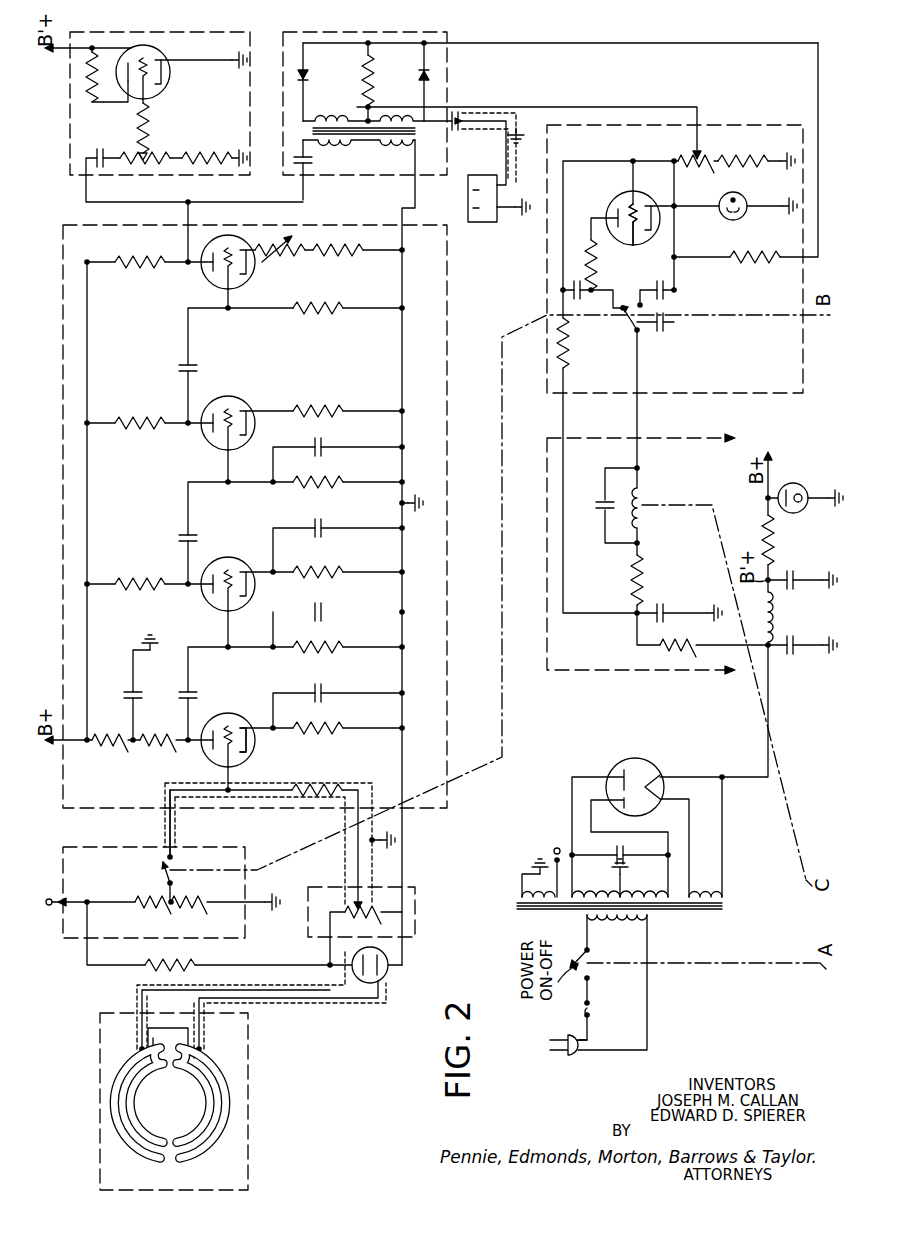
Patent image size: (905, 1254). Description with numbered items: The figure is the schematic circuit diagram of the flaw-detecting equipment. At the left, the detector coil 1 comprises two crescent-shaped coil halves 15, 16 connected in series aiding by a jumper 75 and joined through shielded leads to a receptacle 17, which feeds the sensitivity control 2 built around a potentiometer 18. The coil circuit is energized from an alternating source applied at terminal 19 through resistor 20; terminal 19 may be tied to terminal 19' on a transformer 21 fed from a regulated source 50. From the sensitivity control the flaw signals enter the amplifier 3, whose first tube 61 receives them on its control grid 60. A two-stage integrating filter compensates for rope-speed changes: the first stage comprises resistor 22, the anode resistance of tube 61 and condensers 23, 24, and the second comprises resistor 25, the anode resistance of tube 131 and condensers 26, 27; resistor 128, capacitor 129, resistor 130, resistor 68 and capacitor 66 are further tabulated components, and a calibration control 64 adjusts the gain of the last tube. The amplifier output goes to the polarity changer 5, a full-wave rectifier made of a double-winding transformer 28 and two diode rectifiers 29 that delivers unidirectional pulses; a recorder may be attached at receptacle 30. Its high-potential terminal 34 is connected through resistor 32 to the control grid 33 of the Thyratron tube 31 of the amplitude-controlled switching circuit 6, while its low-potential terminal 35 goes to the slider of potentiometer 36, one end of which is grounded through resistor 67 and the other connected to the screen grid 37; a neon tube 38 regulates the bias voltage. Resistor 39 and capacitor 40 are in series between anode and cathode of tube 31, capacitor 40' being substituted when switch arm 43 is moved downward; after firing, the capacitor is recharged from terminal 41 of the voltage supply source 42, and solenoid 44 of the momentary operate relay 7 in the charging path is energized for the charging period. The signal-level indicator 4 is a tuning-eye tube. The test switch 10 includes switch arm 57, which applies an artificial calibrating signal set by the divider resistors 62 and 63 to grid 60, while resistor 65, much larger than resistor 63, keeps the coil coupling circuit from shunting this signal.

The sensing unit 1 is at (100, 1068).
The sensitivity control 2 is at (308, 894).
The amplifier 3 is at (63, 520).
The signal-level indicator 4 is at (70, 116).
The polarity changer 5 is at (283, 116).
The amplitude-controlled switching circuit 6 is at (547, 222).
The momentary load operate relay 7 is at (547, 492).
The test or calibrating signal switch 10 is at (63, 866).
The coil half 15 is at (150, 1149).
The coil half 16 is at (222, 1118).
The receptacle 17 is at (389, 969).
The potentiometer 18 is at (373, 889).
The terminal 19 is at (51, 918).
The terminal 19' is at (546, 857).
The resistor 20 is at (143, 964).
The transformer 21 is at (662, 913).
The resistor 22 is at (152, 736).
The condenser 23 is at (183, 691).
The condenser 24 is at (315, 609).
The resistor 25 is at (122, 578).
The condenser 26 is at (180, 533).
The condenser 27 is at (315, 443).
The double-winding transformer 28 is at (300, 131).
The diode rectifiers 29 is at (299, 71).
The receptacle 30 is at (490, 224).
The gas-filled rectifier tube 31 is at (612, 213).
The resistor 32 is at (753, 264).
The control grid 33 is at (640, 242).
The high potential terminal 34 is at (355, 43).
The low potential output terminal 35 is at (358, 107).
The potentiometer 36 is at (684, 158).
The screen grid 37 is at (624, 208).
The neon tube 38 is at (720, 206).
The resistor 39 is at (598, 247).
The capacitor 40 is at (652, 284).
The capacitor 40' is at (662, 344).
The terminal 41 is at (770, 656).
The voltage supply source 42 is at (689, 735).
The switch arm 43 is at (632, 335).
The solenoid 44 is at (642, 504).
The source of regulated voltage 50 is at (558, 1047).
The switch arm 57 is at (164, 869).
The control grid 60 is at (230, 724).
The first amplifier tube 61 is at (245, 719).
The resistor 62 is at (143, 906).
The resistor 63 is at (202, 901).
The calibration control 64 is at (285, 257).
The resistor 65 is at (312, 786).
The capacitor 66 is at (577, 281).
The resistor 67 is at (742, 160).
The resistor 68 is at (372, 72).
The jumper 75 is at (150, 1030).
The resistor 128 is at (111, 732).
The capacitor 129 is at (128, 689).
The resistor 130 is at (352, 258).
The tube 131 is at (222, 561).